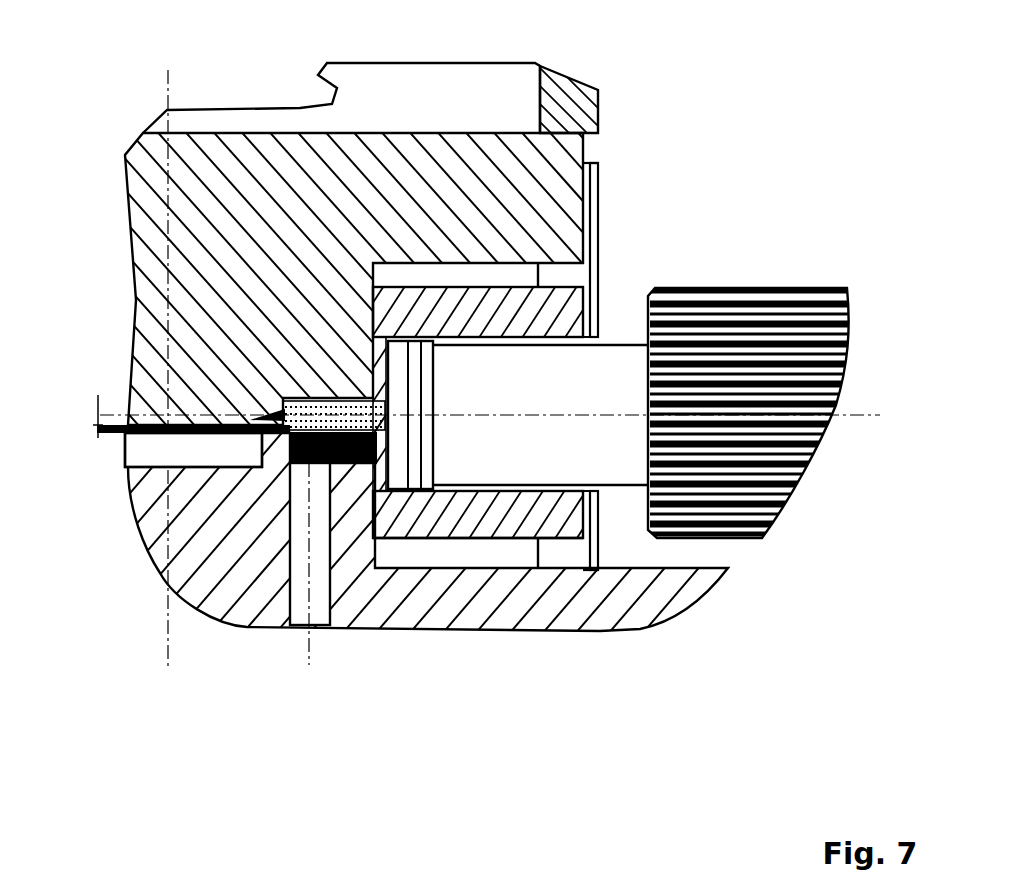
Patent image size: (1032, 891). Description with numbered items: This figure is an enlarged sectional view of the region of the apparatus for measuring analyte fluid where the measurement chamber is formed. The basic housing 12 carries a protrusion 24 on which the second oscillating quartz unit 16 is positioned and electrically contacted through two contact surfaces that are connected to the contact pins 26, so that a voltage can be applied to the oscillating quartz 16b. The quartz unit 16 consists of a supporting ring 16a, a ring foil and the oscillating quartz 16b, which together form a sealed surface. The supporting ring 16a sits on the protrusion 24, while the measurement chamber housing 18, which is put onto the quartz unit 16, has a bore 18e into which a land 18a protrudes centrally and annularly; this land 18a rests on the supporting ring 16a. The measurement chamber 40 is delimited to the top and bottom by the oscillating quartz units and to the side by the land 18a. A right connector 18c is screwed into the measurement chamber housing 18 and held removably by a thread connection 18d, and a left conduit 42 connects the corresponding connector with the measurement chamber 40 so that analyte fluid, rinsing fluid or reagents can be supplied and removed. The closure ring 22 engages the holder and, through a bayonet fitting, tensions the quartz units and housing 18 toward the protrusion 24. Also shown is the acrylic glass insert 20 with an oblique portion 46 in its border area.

The basic housing 12 is at (633, 600).
The second oscillating quartz unit 16 is at (213, 441).
The supporting ring 16a is at (215, 520).
The oscillating quartz 16b is at (212, 438).
The measurement chamber housing 18 is at (414, 490).
The land 18a is at (293, 404).
The right connector 18c is at (717, 440).
The thread connection 18d is at (543, 485).
The bore in the measurement chamber housing 18e is at (348, 313).
The acrylic glass insert 20 is at (533, 203).
The closure ring 22 is at (598, 92).
The protrusion 24 is at (410, 497).
The contact pins 26 is at (306, 590).
The measurement chamber 40 is at (293, 467).
The left conduit 42 is at (376, 470).
The oblique portion in the border area of the acrylic glass insert 46 is at (275, 415).